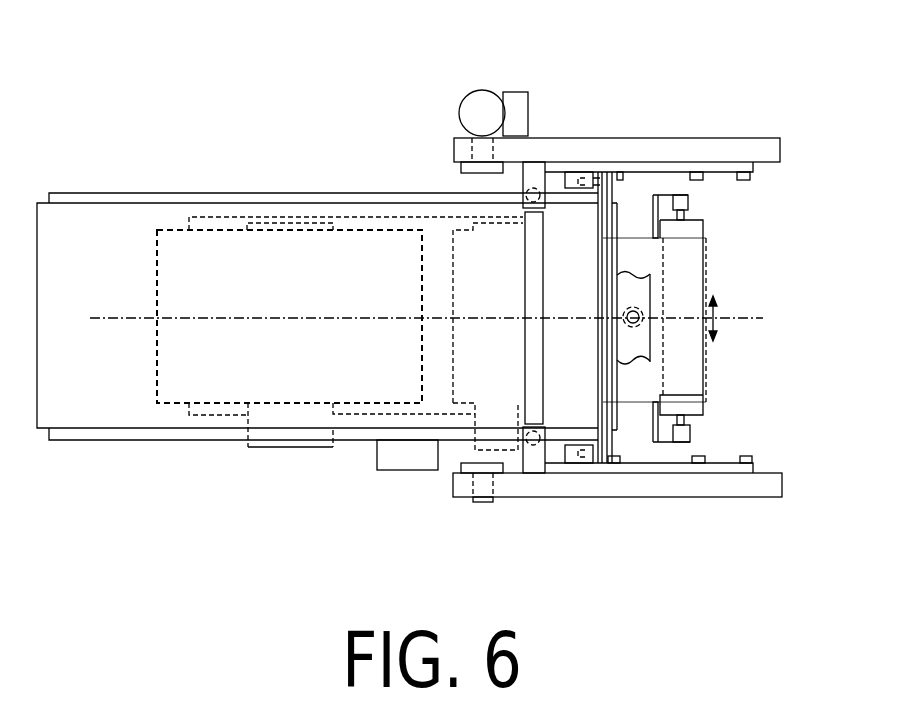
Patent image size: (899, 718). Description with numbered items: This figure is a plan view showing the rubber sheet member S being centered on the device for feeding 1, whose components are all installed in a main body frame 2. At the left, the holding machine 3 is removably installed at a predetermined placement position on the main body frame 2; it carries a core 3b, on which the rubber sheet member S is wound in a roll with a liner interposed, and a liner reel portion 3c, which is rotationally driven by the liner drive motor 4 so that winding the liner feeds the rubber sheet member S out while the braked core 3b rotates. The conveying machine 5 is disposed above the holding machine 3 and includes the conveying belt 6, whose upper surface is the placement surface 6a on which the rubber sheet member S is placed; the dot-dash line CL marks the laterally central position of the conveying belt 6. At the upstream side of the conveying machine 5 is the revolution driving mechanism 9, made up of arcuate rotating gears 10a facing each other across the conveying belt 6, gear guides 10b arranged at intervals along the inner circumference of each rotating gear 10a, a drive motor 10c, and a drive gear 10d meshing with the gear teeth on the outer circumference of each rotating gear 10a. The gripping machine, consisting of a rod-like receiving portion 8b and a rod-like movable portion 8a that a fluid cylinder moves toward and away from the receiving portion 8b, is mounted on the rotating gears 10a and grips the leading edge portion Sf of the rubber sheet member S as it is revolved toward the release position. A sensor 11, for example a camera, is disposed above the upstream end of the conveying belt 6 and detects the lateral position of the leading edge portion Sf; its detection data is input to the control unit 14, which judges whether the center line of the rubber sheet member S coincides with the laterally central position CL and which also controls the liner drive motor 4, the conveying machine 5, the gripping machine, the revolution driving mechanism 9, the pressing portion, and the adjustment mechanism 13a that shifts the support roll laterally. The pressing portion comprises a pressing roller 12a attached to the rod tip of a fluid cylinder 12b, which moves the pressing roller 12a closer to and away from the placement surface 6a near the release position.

The device for feeding a rubber sheet member 1 is at (321, 131).
The main body frame 2 is at (672, 148).
The holding machine 3 is at (226, 243).
The core 3b is at (278, 450).
The liner reel portion 3c is at (455, 348).
The liner drive motor 4 is at (408, 463).
The conveying machine 5 is at (80, 214).
The conveying belt 6 is at (272, 207).
The placement surface 6a is at (130, 230).
The movable portion 8a is at (610, 226).
The receiving portion 8b is at (598, 268).
The revolution driving mechanism 9 is at (562, 162).
The rotating gear 10a is at (603, 165).
The gear guide 10b is at (745, 178).
The drive motor 10c is at (478, 108).
The drive gear 10d is at (465, 168).
The sensor 11 is at (628, 313).
The pressing roller 12a is at (527, 278).
The fluid cylinder 12b is at (525, 193).
The adjustment mechanism 13a is at (688, 205).
The control unit 14 is at (697, 408).
The rubber sheet member S is at (697, 367).
The leading edge portion Sf is at (612, 352).
The laterally central position CL is at (450, 318).